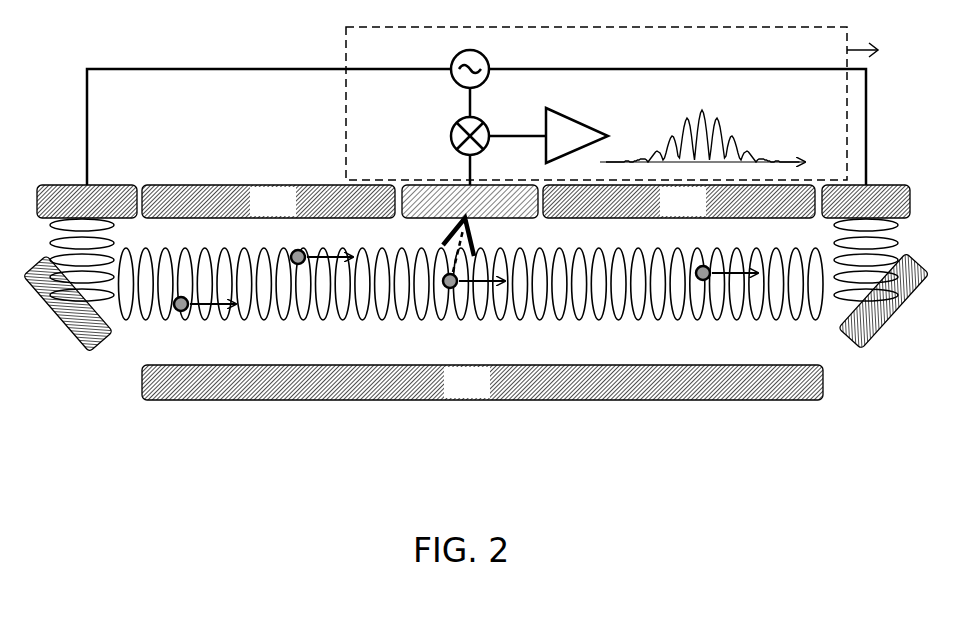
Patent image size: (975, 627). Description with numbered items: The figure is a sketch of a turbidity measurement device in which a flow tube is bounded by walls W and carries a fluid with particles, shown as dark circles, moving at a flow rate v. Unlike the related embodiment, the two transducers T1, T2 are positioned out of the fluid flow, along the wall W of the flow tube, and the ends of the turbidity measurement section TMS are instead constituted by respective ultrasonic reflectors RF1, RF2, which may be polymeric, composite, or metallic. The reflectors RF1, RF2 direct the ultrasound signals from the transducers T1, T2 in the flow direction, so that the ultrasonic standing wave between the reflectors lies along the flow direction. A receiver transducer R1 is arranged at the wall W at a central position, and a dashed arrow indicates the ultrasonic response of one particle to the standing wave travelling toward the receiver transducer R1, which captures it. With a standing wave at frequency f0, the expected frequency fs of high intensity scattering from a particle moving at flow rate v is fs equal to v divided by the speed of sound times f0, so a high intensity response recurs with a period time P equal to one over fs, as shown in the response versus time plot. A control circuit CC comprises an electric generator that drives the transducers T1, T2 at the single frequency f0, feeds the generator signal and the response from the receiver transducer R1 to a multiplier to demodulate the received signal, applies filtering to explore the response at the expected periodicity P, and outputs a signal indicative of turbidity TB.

The control circuit CC is at (344, 52).
The turbidity TB is at (880, 52).
The turbidity measurement section TMS is at (91, 398).
The transducer T1 is at (66, 203).
The transducer T2 is at (877, 189).
The ultrasonic reflector RF1 is at (75, 298).
The ultrasonic reflector RF2 is at (877, 313).
The wall W is at (482, 292).
The receiver transducer R1 is at (470, 201).
The frequency f0 is at (472, 127).
The expected frequency fs is at (519, 112).
The period time P is at (690, 99).
The flow rate v is at (486, 266).